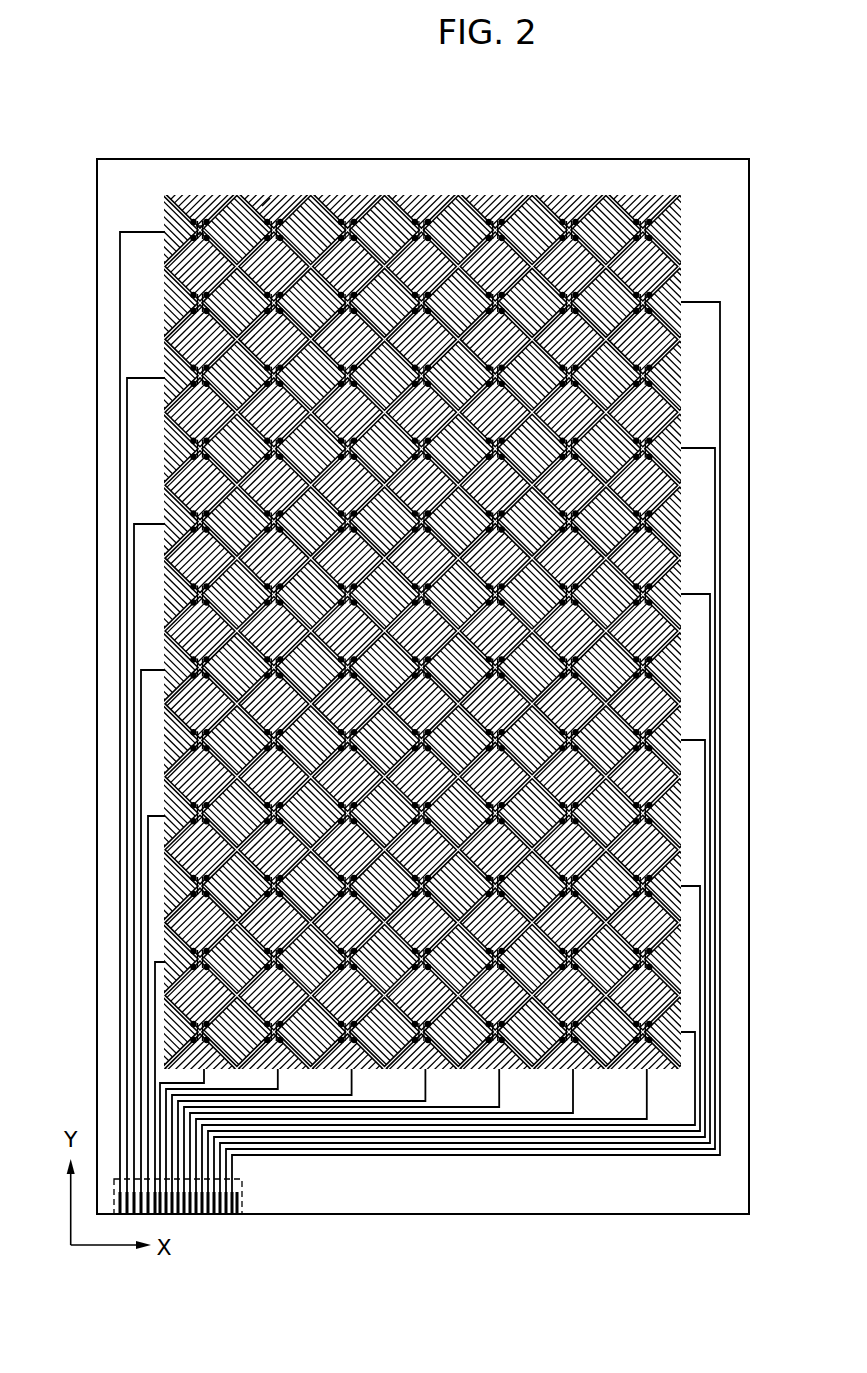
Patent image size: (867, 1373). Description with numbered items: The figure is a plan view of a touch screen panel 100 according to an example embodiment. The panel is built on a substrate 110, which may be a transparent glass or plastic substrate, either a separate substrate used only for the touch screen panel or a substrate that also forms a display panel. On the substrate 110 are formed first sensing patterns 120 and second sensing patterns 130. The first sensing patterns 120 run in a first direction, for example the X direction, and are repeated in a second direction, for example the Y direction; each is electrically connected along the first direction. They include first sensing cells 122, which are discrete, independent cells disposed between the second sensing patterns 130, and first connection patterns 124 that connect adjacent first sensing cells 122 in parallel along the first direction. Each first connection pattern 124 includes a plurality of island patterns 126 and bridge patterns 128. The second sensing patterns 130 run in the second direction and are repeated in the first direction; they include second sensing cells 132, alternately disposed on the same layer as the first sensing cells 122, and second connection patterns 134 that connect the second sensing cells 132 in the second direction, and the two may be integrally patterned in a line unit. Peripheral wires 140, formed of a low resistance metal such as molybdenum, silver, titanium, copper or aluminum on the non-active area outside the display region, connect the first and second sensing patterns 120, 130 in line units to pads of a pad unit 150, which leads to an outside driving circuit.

The touch screen panel 100 is at (719, 121).
The substrate 110 is at (555, 158).
The first sensing patterns 120 is at (328, 77).
The first sensing cells 122 is at (317, 223).
The first connection patterns 124 is at (373, 111).
The island patterns 126 is at (333, 200).
The bridge patterns 128 is at (350, 215).
The second sensing patterns 130 is at (303, 107).
The second sensing cells 132 is at (210, 220).
The second connection patterns 134 is at (268, 200).
The peripheral wires 140 is at (120, 279).
The pad unit 150 is at (244, 1193).